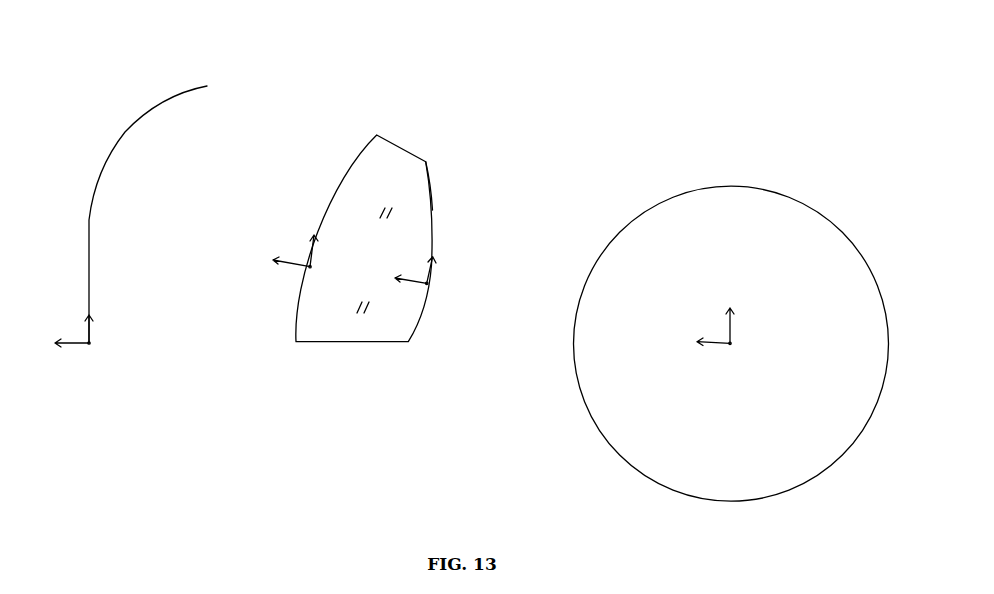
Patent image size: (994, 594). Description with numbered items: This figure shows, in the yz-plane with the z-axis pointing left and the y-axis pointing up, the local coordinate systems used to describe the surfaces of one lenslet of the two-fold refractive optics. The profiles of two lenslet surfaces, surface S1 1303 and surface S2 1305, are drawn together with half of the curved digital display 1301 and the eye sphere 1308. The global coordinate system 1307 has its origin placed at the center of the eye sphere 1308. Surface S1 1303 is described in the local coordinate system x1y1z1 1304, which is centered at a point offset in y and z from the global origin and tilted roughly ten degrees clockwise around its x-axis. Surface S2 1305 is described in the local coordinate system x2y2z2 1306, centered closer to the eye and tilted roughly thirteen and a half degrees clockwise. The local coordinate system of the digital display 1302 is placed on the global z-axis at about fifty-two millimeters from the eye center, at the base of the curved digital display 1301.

The curved digital display 1301 is at (95, 217).
The local coordinate system of digital display 1302 is at (90, 346).
The surface S1 1303 is at (350, 168).
The local coordinate system x1y1z1 1304 is at (306, 268).
The surface S2 1305 is at (430, 178).
The local coordinate system x2y2z2 1306 is at (428, 287).
The global coordinate system 1307 is at (732, 347).
The eye sphere 1308 is at (650, 210).